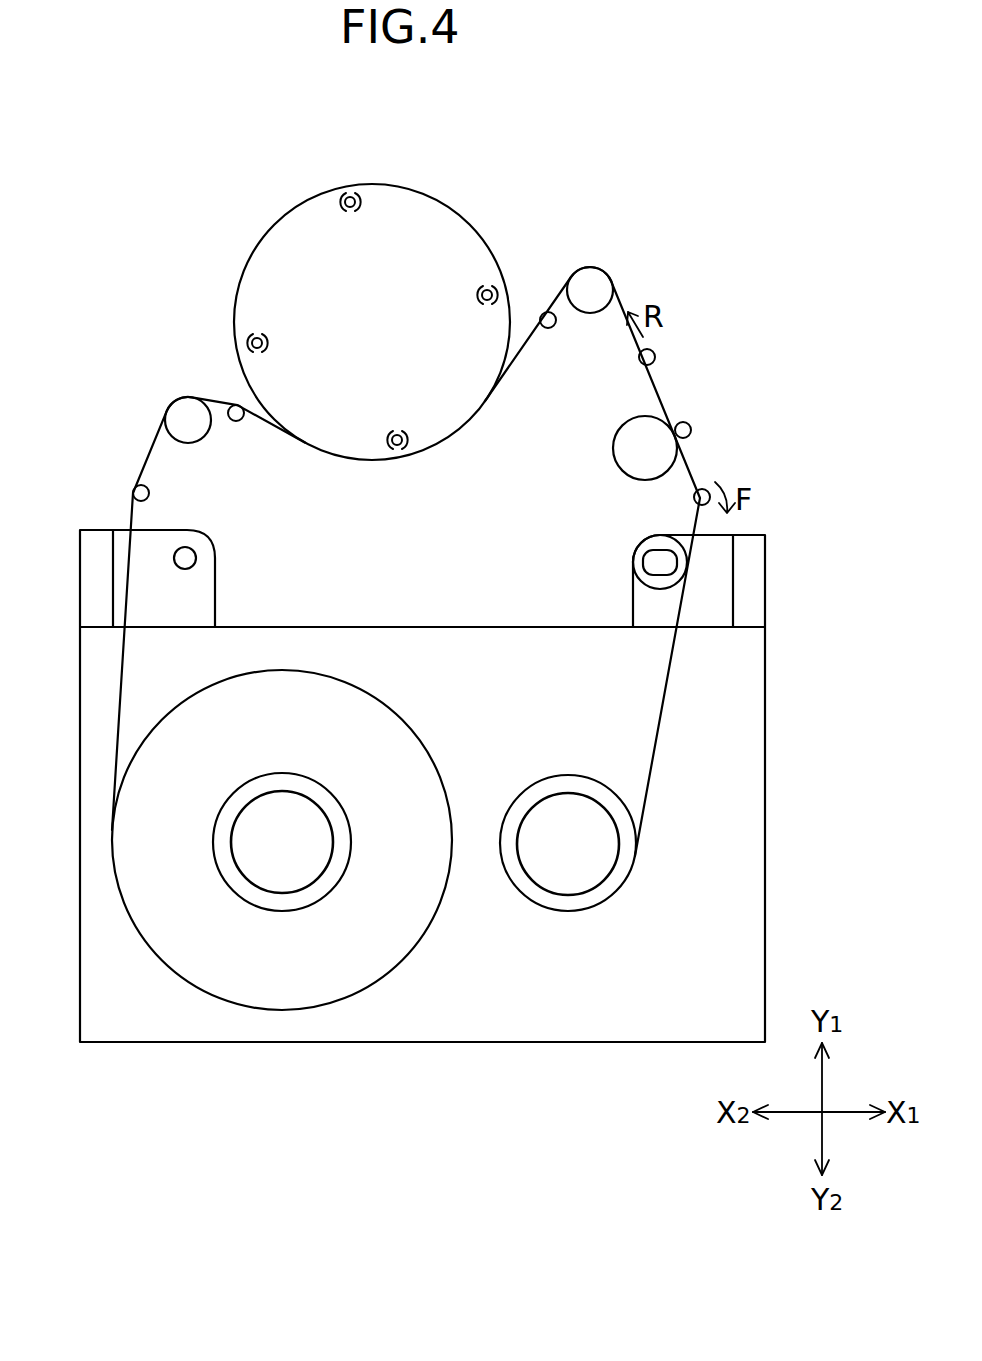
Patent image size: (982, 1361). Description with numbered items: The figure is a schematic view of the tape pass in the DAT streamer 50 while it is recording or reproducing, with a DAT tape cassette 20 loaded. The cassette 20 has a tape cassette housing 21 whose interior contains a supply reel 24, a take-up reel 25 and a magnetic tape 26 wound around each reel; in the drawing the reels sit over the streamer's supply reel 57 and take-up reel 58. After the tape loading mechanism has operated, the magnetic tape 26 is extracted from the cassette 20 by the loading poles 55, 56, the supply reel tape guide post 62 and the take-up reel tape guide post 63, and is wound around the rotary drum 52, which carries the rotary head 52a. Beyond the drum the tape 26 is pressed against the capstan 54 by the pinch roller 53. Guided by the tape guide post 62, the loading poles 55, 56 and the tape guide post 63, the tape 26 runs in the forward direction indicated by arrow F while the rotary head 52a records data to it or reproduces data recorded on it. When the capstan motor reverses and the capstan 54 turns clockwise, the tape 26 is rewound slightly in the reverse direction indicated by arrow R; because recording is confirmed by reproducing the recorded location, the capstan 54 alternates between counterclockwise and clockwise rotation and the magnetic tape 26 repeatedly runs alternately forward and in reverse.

The DAT tape cassette 20 is at (773, 742).
The tape cassette housing 21 is at (757, 865).
The supply reel 24 is at (228, 813).
The take-up reel 25 is at (528, 797).
The magnetic tape 26 is at (620, 302).
The DAT streamer 50 is at (542, 117).
The rotary drum 52 is at (268, 260).
The rotary head 52a is at (393, 430).
The pinch roller 53 is at (618, 438).
The capstan 54 is at (690, 425).
The loading pole 55 is at (182, 413).
The loading pole 56 is at (585, 278).
The supply reel 57 is at (290, 803).
The take-up reel 58 is at (562, 813).
The supply reel tape guide post 62 is at (150, 493).
The take-up reel tape guide post 63 is at (694, 497).